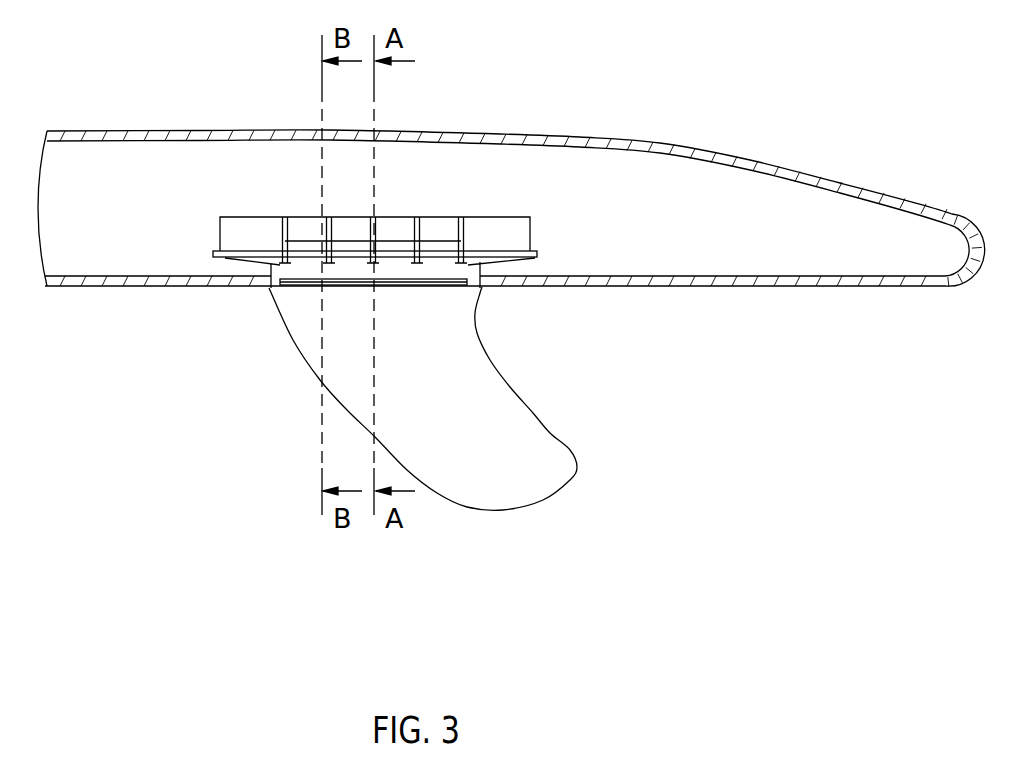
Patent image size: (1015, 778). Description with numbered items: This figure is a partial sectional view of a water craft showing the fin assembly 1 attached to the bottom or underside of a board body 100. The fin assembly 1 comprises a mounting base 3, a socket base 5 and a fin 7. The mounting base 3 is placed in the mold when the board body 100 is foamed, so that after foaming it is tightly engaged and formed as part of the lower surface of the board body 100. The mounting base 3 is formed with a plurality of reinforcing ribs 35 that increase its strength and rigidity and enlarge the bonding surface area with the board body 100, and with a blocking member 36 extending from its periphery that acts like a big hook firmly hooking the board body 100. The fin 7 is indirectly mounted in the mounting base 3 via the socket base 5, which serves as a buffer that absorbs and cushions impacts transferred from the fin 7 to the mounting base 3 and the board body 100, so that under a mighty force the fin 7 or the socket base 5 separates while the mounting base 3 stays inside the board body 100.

The board body 100 is at (738, 180).
The reinforcing ribs 35 is at (497, 228).
The blocking member 36 is at (212, 254).
The fin assembly 1 is at (450, 384).
The mounting base 3 is at (465, 270).
The socket base 5 is at (447, 281).
The fin 7 is at (618, 312).